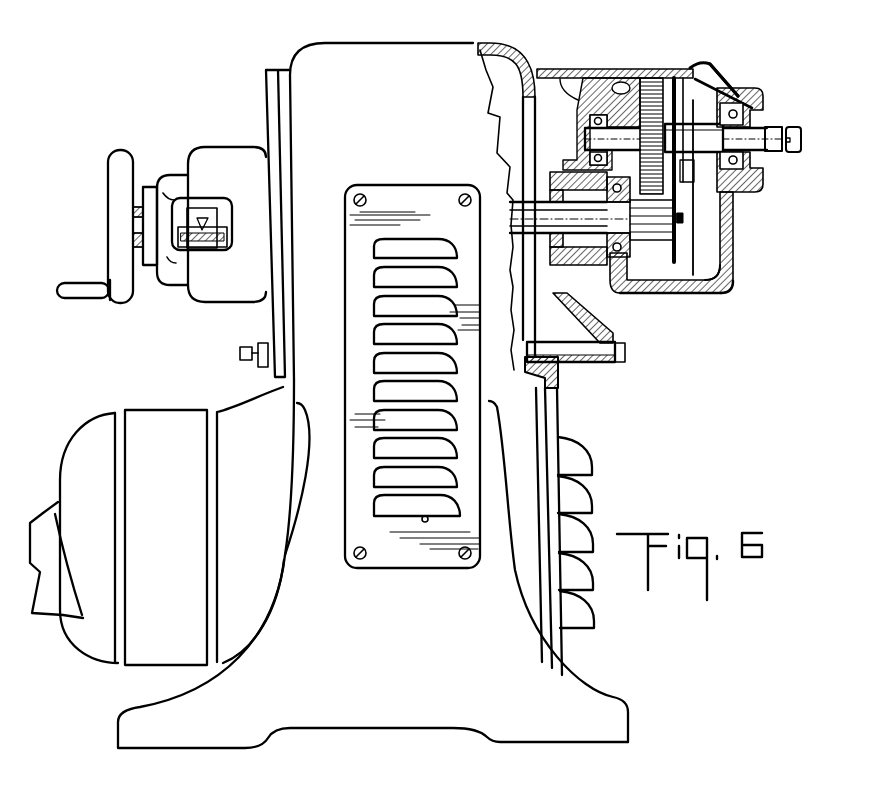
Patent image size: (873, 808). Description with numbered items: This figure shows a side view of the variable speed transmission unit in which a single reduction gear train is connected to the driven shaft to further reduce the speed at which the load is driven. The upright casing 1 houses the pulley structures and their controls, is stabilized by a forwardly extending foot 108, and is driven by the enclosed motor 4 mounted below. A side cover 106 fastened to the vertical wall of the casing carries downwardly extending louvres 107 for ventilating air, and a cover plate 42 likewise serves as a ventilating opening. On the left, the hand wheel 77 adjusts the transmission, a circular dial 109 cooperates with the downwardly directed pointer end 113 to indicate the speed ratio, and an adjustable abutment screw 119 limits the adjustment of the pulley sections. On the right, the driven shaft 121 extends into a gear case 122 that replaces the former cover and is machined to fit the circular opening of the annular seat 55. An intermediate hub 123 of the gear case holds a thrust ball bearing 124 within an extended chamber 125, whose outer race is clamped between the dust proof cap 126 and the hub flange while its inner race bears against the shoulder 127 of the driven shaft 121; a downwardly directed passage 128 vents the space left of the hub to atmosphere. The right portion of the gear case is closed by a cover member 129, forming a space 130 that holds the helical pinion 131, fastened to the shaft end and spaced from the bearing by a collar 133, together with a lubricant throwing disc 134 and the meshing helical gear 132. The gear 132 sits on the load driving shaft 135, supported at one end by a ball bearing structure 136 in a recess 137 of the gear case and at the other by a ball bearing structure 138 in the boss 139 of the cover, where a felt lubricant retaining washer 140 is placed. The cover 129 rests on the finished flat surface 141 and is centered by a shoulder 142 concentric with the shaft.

The casing 1 is at (425, 710).
The motor 4 is at (170, 548).
The cover plate 42 is at (557, 460).
The annular seat 55 is at (565, 69).
The hand wheel 77 is at (108, 173).
The side cover 106 is at (350, 320).
The louvres 107 is at (378, 368).
The foot 108 is at (140, 750).
The circular dial 109 is at (203, 252).
The pointer end 113 is at (202, 218).
The screw 119 is at (240, 352).
The driven shaft 121 is at (530, 197).
The gear case 122 is at (617, 78).
The intermediate hub 123 is at (630, 78).
The thrust ball bearing 124 is at (613, 283).
The chamber 125 is at (618, 293).
The dust proof cap 126 is at (548, 252).
The shoulder 127 is at (696, 293).
The downwardly directed passage 128 is at (593, 301).
The cover member 129 is at (733, 219).
The space 130 is at (680, 243).
The helical pinion 131 is at (677, 202).
The helical gear 132 is at (700, 112).
The collar 133 is at (636, 242).
The lubricant throwing disc 134 is at (704, 290).
The load driving shaft 135 is at (720, 92).
The ball bearing structure 136 is at (571, 79).
The recess 137 is at (586, 133).
The ball bearing structure 138 is at (735, 88).
The boss 139 is at (765, 97).
The lubricant retaining washer 140 is at (776, 104).
The flat surface 141 is at (712, 285).
The shoulder 142 is at (752, 92).